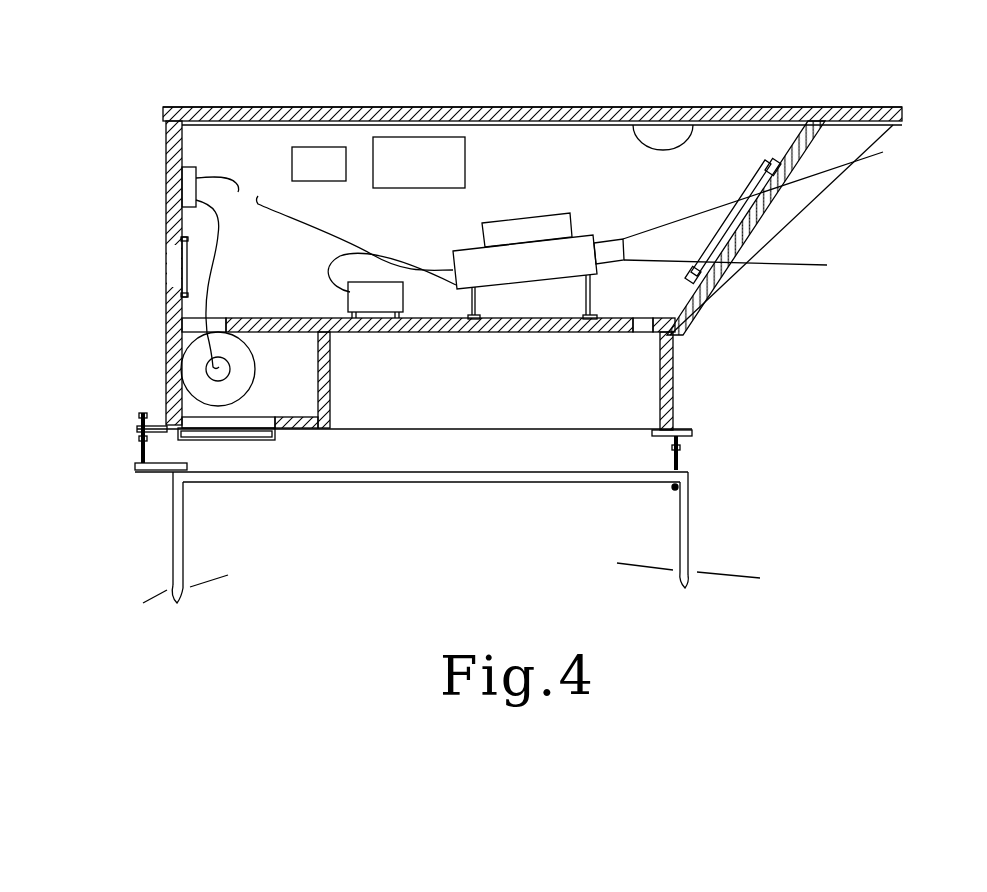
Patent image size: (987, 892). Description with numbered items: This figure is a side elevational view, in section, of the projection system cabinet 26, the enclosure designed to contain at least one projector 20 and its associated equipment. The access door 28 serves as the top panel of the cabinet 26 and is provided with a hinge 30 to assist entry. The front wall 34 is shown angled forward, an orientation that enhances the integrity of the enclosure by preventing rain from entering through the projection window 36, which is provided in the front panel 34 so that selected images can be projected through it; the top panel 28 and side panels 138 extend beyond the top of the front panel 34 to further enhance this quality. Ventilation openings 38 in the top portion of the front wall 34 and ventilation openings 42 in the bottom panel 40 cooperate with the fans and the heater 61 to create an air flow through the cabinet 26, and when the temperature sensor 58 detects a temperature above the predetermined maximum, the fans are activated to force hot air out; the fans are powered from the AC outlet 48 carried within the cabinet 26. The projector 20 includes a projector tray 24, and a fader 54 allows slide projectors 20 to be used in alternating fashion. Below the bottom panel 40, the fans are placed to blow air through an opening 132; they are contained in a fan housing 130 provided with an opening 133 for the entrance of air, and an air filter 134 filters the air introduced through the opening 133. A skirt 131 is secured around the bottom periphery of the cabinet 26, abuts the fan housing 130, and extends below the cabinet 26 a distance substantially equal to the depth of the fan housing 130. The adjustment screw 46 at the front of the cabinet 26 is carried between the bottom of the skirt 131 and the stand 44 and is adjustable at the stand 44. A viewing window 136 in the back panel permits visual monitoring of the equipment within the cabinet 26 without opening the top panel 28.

The projector 20 is at (575, 262).
The projector tray 24 is at (556, 222).
The projection system cabinet 26 is at (396, 98).
The access door 28 is at (557, 107).
The hinge 30 is at (697, 126).
The front wall 34 is at (817, 135).
The window 36 is at (735, 230).
The ventilation openings 38 is at (782, 163).
The bottom panel 40 is at (467, 333).
The ventilation openings 42 is at (643, 335).
The stand 44 is at (697, 542).
The adjustment screw 46 is at (140, 448).
The AC outlet 48 is at (167, 145).
The fader 54 is at (375, 298).
The temperature sensor 58 is at (322, 152).
The heater 61 is at (421, 177).
The fan housing 130 is at (330, 397).
The skirt 131 is at (480, 418).
The opening 132 is at (197, 325).
The opening 133 is at (312, 425).
The air filter 134 is at (227, 443).
The viewing window 136 is at (176, 260).
The side panels 138 is at (682, 191).